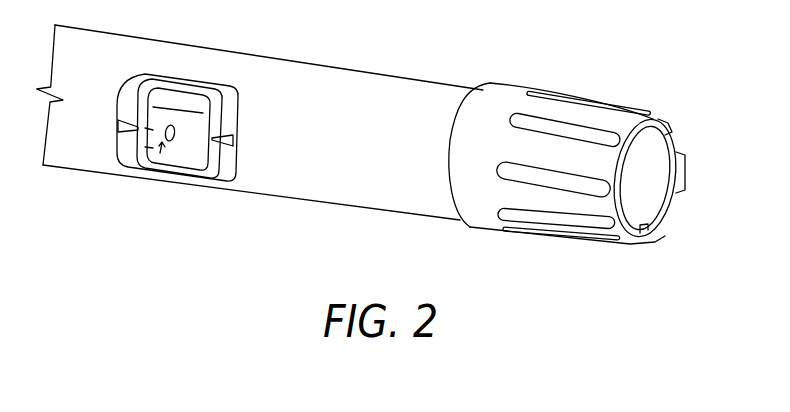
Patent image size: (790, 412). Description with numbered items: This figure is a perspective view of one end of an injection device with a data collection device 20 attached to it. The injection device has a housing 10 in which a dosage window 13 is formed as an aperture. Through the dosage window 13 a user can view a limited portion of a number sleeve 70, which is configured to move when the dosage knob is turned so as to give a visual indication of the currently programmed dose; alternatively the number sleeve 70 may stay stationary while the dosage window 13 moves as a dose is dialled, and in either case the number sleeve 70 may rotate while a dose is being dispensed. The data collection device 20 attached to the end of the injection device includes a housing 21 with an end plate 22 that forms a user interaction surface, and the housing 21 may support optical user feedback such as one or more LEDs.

The housing 10 is at (80, 171).
The dosage window 13 is at (201, 77).
The number sleeve 70 is at (172, 160).
The data collection device 20 is at (578, 169).
The housing 21 is at (506, 84).
The end plate 22 is at (659, 137).